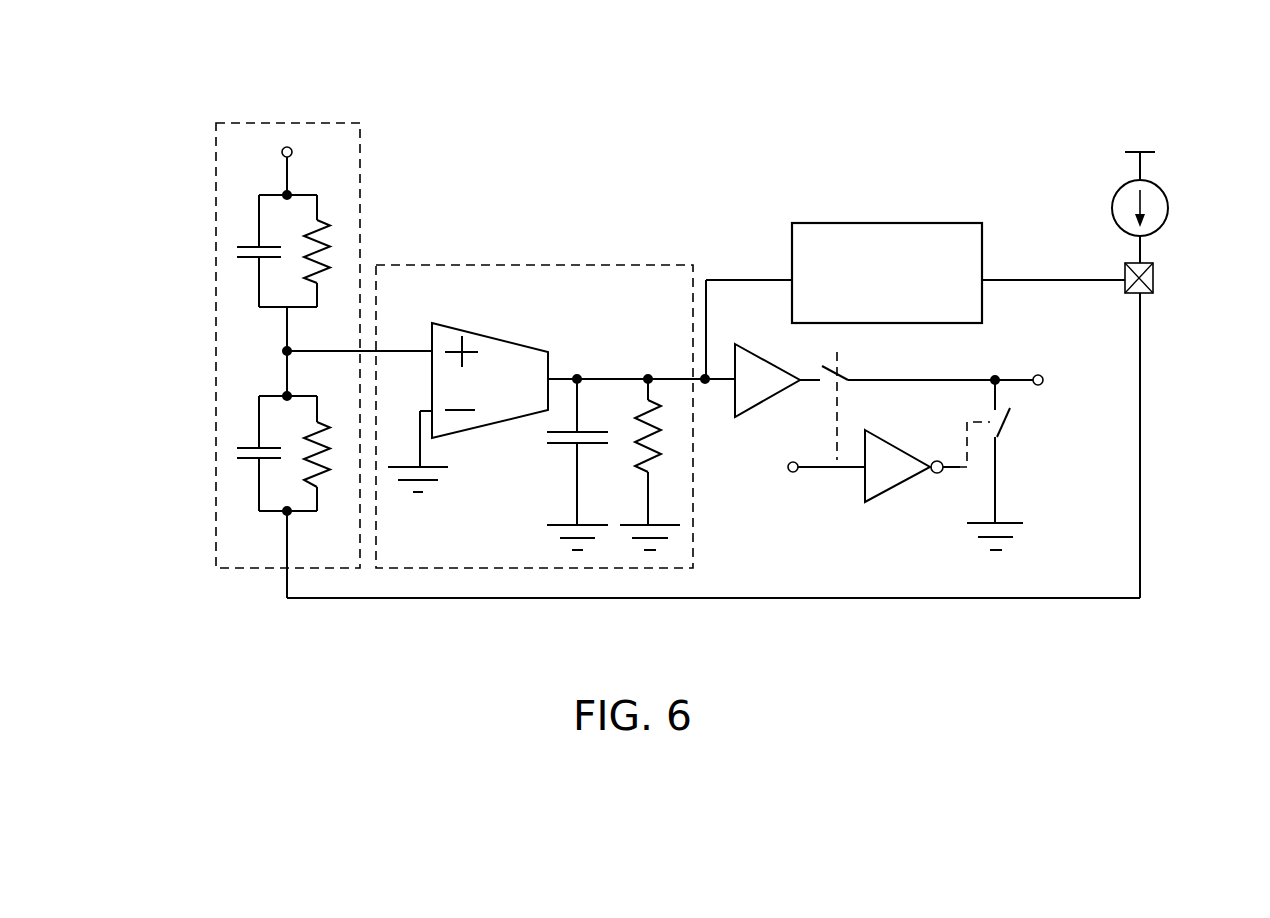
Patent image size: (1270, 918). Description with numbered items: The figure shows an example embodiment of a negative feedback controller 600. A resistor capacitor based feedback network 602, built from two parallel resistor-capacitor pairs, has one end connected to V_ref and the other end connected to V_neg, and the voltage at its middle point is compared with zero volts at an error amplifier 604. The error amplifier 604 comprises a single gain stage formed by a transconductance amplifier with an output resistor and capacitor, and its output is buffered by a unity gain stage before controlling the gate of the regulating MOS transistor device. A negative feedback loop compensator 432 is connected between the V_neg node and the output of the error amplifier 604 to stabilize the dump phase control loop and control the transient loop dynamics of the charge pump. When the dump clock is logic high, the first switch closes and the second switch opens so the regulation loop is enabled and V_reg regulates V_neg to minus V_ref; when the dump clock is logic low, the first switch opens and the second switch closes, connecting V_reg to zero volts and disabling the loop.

The negative feedback controller 600 is at (1078, 58).
The resistor capacitor based feedback network 602 is at (215, 235).
The error amplifier 604 is at (633, 265).
The negative feedback loop compensator 432 is at (853, 223).